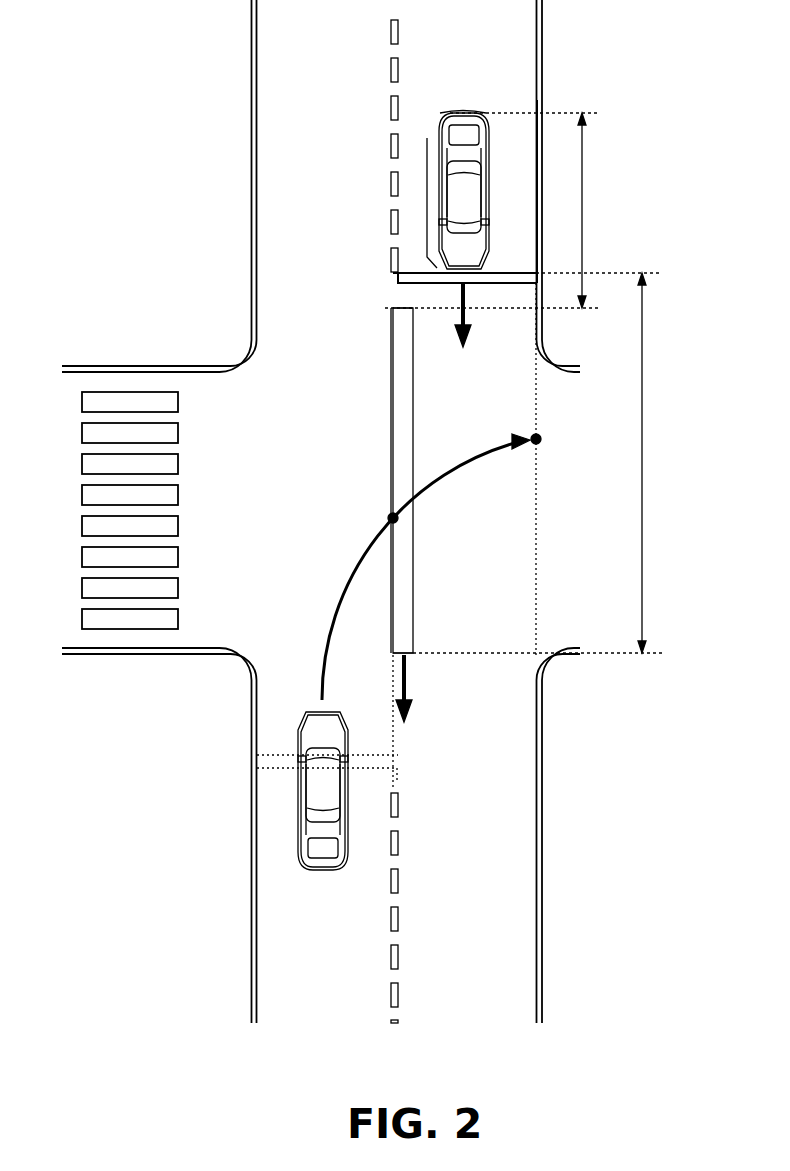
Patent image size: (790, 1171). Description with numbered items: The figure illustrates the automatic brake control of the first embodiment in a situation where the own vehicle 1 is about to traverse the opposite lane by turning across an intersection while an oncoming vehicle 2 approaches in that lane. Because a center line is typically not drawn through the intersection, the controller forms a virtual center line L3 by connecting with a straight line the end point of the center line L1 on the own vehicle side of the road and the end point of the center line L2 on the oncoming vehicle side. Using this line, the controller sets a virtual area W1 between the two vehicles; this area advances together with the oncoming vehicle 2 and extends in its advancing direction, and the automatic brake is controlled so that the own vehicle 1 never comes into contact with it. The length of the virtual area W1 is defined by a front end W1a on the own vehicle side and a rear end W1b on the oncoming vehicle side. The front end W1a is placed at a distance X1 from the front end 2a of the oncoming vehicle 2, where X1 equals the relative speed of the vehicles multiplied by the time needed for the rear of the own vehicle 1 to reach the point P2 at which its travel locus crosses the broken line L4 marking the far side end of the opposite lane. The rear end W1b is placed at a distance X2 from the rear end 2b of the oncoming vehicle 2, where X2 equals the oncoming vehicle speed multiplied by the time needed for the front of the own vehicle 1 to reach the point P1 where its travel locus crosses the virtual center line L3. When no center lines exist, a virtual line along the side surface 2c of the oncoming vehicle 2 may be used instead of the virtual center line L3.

The own vehicle 1 is at (268, 786).
The oncoming vehicle 2 is at (415, 190).
The front end of the oncoming vehicle 2a is at (445, 288).
The rear end of the oncoming vehicle 2b is at (463, 113).
The side surface of the oncoming vehicle 2c is at (427, 170).
The center line L1 is at (399, 915).
The center line L2 is at (399, 30).
The virtual center line L3 is at (398, 728).
The side end of the opposite lane L4 is at (533, 556).
The virtual area W1 is at (385, 430).
The front end of the virtual area W1a is at (413, 655).
The rear end of the virtual area W1b is at (395, 308).
The distance X1 is at (656, 463).
The distance X2 is at (596, 210).
The point P1 is at (388, 514).
The point P2 is at (532, 435).